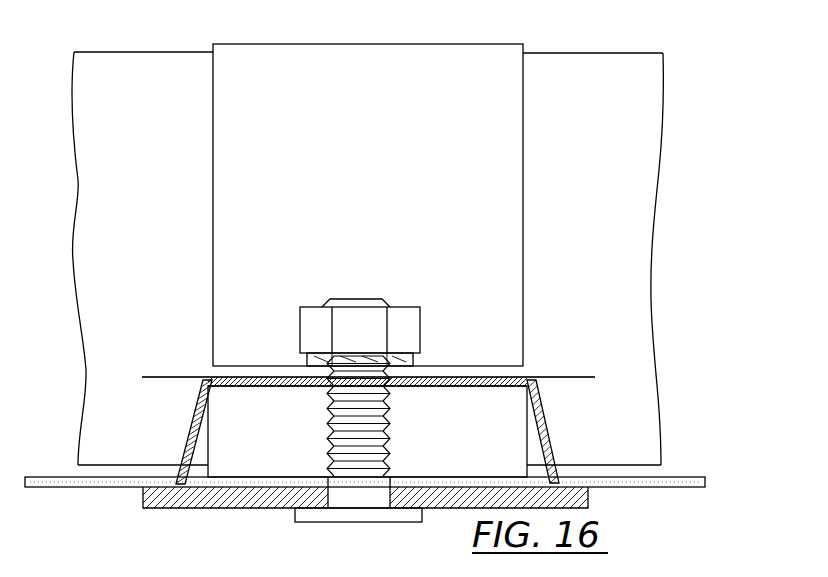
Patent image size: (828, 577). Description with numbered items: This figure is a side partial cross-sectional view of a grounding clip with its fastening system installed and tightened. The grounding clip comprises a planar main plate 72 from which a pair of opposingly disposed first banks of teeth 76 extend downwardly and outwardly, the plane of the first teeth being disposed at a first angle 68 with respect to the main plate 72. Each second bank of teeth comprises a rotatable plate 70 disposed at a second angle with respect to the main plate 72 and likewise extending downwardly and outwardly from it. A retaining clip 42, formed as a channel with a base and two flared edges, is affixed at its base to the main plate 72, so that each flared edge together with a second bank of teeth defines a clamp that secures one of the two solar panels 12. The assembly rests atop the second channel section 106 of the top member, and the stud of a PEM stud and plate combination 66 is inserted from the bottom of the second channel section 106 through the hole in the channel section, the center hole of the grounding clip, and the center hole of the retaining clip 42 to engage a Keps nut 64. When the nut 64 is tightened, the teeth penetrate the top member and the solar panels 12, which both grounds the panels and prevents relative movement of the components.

The solar panel 12 is at (128, 52).
The retaining clip 42 is at (374, 186).
The Keps nut 64 is at (420, 340).
The PEM stud and plate combination 66 is at (271, 509).
The first angle 68 is at (187, 413).
The rotatable plate 70 is at (465, 448).
The main plate 72 is at (530, 373).
The first bank of teeth 76 is at (186, 450).
The second channel section 106 is at (662, 475).